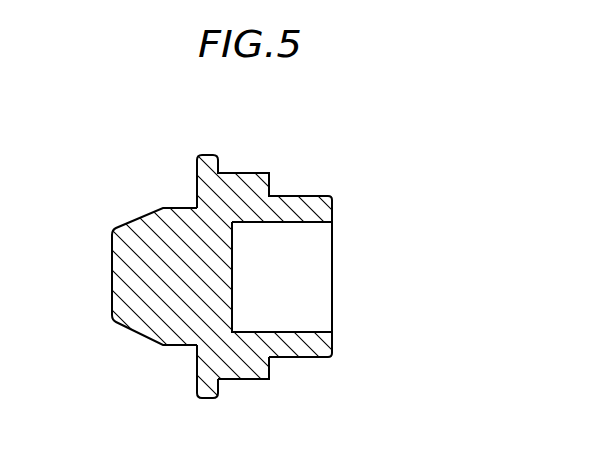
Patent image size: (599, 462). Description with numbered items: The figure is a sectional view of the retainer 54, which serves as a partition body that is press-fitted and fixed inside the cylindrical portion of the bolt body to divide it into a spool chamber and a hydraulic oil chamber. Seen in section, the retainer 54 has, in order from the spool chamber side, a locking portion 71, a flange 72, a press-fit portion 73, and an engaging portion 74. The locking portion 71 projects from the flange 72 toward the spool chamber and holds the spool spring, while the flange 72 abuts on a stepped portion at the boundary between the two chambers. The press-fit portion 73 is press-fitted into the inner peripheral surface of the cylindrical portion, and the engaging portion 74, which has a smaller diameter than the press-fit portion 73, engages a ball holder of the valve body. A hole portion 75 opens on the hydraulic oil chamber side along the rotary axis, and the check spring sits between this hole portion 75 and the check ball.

The retainer 54 is at (298, 165).
The locking portion 71 is at (132, 220).
The flange 72 is at (200, 386).
The press-fit portion 73 is at (243, 373).
The engaging portion 74 is at (303, 359).
The hole portion 75 is at (342, 280).